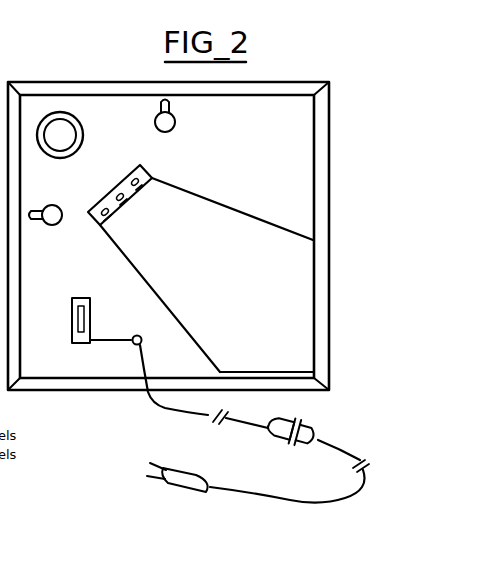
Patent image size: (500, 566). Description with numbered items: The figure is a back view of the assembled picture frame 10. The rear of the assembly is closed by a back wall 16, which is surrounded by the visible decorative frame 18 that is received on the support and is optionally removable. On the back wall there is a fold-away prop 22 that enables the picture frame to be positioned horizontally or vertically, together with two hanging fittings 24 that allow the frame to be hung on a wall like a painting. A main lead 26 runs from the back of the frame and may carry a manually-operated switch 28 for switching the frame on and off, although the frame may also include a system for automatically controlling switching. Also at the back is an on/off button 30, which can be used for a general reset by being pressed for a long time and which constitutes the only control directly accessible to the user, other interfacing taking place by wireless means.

The picture frame 10 is at (192, 195).
The back wall 16 is at (295, 166).
The decorative frame 18 is at (277, 88).
The fold-away prop 22 is at (297, 301).
The hanging fittings 24 is at (175, 120).
The main lead 26 is at (150, 402).
The manually-operated switch 28 is at (304, 433).
The on/off button 30 is at (83, 134).